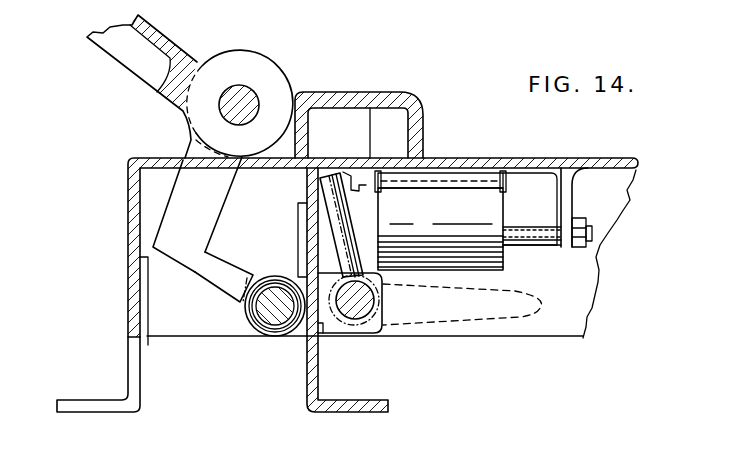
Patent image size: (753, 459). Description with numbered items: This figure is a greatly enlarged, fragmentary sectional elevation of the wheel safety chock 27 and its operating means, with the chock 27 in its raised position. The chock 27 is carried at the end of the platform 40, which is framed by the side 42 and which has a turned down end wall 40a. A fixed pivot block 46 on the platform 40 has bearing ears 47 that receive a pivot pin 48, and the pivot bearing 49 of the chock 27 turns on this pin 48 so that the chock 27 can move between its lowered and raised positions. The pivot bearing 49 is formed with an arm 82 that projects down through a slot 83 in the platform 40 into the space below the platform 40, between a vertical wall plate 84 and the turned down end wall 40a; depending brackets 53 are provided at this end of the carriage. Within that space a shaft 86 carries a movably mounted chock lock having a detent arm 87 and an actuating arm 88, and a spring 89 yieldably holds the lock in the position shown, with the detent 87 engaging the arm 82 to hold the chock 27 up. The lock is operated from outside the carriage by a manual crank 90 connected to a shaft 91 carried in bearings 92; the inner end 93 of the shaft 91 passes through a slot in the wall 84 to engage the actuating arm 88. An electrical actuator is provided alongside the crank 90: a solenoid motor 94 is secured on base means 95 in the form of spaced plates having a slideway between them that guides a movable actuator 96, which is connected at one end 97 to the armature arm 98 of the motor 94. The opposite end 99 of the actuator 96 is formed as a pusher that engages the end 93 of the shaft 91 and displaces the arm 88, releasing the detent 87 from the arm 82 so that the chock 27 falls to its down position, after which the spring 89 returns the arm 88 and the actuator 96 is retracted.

The safety chock 27 is at (161, 32).
The pivot bearing 49 is at (258, 55).
The pivot pin 48 is at (250, 91).
The bearing ears 47 is at (296, 92).
The fixed pivot block 46 is at (400, 92).
The platform 40 is at (597, 158).
The turned down end wall 40a is at (128, 221).
The slot 83 is at (186, 150).
The arm 82 is at (171, 196).
The detent arm 87 is at (215, 285).
The actuating arm 88 is at (300, 217).
The spring 89 is at (288, 280).
The shaft 86 is at (270, 338).
The depending bracket 53 is at (130, 371).
The vertical wall plate 84 is at (318, 380).
The shaft 91 is at (363, 318).
The bearings 92 is at (383, 325).
The inner end 93 is at (354, 233).
The pusher end 99 is at (360, 193).
The solenoid motor 94 is at (455, 222).
The base means 95 is at (463, 173).
The movable actuator 96 is at (540, 173).
The end 97 is at (567, 205).
The armature arm 98 is at (544, 211).
The manual crank 90 is at (529, 286).
The side 42 is at (580, 305).